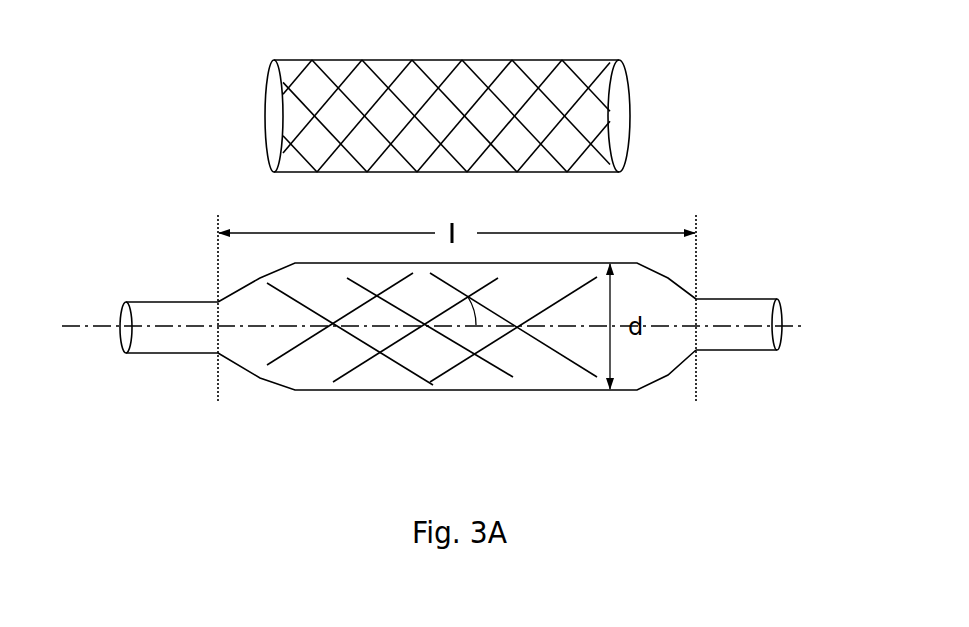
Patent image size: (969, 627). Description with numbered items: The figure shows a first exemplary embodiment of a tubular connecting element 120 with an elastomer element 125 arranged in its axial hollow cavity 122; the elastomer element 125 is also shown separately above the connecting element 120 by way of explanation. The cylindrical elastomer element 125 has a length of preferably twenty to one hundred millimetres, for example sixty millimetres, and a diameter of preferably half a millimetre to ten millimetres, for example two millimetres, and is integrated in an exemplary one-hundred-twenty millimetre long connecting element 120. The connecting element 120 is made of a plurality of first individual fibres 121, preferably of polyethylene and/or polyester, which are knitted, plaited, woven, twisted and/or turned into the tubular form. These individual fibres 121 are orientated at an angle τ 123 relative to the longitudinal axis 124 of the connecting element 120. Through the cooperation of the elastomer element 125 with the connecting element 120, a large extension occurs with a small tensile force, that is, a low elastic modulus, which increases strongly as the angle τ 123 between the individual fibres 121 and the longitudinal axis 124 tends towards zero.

The tubular connecting element 120 is at (675, 282).
The first individual fibres 121 is at (408, 367).
The axial hollow cavity 122 is at (778, 332).
The angle τ 123 is at (480, 320).
The longitudinal axis 124 is at (105, 325).
The elastomer element 125 is at (542, 63).